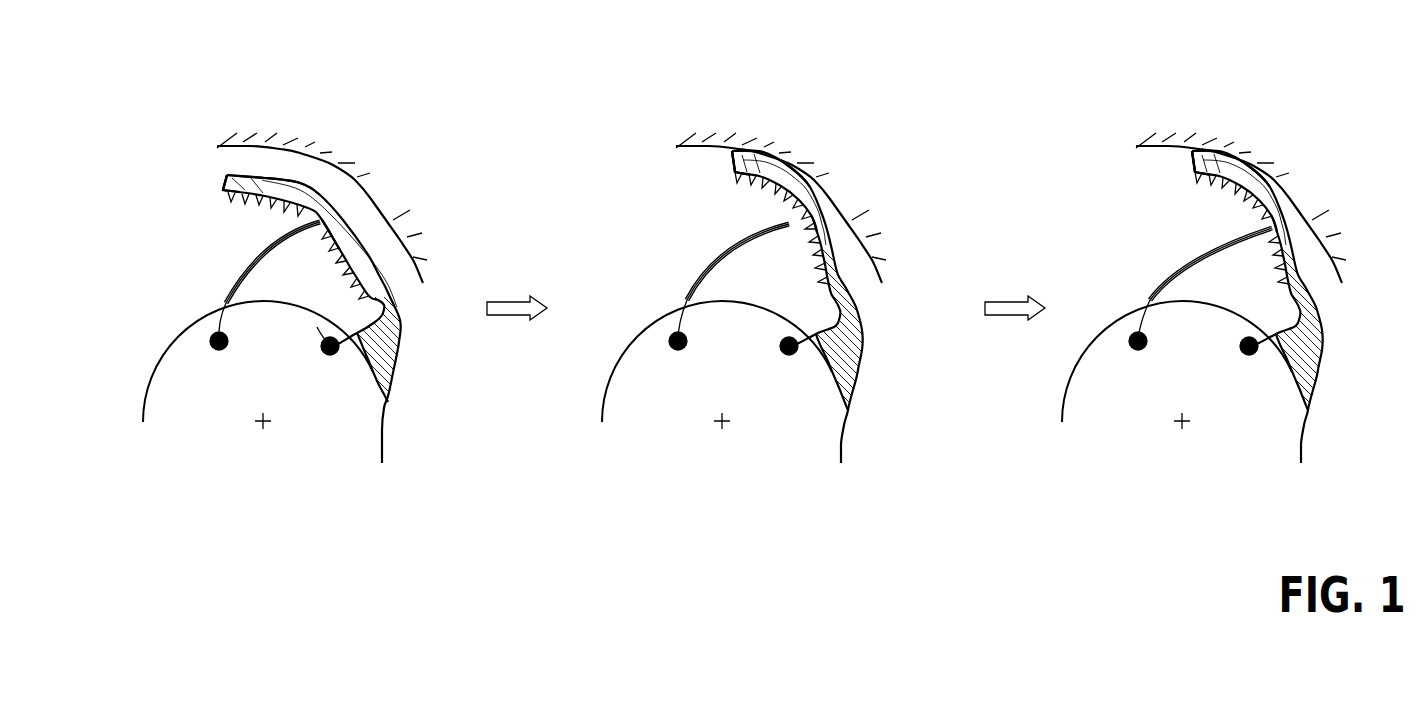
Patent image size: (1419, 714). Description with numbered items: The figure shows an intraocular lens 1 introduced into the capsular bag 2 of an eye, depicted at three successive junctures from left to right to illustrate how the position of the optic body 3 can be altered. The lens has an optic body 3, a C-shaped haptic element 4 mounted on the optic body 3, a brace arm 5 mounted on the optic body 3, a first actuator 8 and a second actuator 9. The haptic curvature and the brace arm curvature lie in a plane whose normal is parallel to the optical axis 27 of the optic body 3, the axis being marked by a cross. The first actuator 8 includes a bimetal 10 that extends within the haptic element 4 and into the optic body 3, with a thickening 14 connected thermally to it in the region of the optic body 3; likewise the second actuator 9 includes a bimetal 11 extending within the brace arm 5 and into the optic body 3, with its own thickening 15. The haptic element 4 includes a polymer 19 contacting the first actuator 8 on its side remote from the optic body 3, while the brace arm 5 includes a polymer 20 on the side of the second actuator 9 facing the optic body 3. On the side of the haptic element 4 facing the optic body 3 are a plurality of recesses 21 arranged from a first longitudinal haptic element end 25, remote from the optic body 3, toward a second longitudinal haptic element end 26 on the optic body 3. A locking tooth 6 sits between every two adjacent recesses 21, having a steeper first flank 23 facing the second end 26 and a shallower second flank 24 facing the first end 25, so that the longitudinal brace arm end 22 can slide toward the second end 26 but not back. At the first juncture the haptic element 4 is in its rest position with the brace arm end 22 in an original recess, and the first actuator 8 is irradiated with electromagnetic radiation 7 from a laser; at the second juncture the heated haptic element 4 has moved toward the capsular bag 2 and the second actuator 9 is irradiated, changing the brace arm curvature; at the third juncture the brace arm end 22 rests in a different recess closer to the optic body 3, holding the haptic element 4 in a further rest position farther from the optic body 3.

The intraocular lens 1 is at (150, 231).
The capsular bag 2 is at (358, 182).
The optic body 3 is at (380, 370).
The haptic element 4 is at (282, 187).
The brace arm 5 is at (265, 248).
The locking tooth 6 is at (227, 197).
The electromagnetic radiation 7 is at (315, 324).
The first actuator 8 is at (312, 354).
The second actuator 9 is at (205, 355).
The bimetal of the first actuator 10 is at (295, 190).
The bimetal of the second actuator 11 is at (227, 300).
The thickening of the first actuator 14 is at (330, 355).
The thickening of the second actuator 15 is at (219, 350).
The polymer of the haptic element 19 is at (388, 283).
The polymer of the brace arm 20 is at (256, 273).
The recesses 21 is at (238, 177).
The longitudinal brace arm end 22 is at (335, 217).
The first flank 23 is at (268, 193).
The second flank 24 is at (253, 200).
The first longitudinal haptic element end 25 is at (223, 177).
The second longitudinal haptic element end 26 is at (380, 348).
The optical axis 27 is at (265, 422).